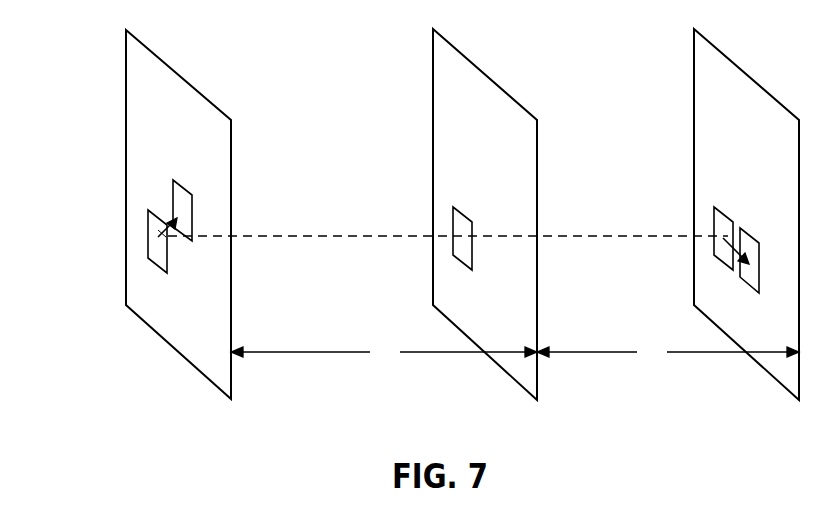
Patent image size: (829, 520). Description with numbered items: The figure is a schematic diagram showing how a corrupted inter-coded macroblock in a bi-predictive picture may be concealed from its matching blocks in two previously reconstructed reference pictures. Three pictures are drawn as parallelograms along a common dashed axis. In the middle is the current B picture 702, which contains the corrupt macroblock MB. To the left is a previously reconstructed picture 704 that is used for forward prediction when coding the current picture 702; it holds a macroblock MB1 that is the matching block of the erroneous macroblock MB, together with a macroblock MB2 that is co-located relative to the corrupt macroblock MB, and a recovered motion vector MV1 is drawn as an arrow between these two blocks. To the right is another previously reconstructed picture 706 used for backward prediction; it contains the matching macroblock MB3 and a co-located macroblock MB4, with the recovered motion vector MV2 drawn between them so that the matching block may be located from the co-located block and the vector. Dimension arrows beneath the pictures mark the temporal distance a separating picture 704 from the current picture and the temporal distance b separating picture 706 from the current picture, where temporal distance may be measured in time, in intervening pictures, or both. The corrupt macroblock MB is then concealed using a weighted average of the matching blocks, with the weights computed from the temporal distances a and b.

The previously reconstructed picture 704 is at (126, 168).
The current B picture 702 is at (433, 168).
The previously reconstructed picture 706 is at (694, 168).
The corrupt macroblock MB is at (458, 251).
The matching macroblock MB1 is at (174, 198).
The co-located macroblock MB2 is at (158, 253).
The matching macroblock MB3 is at (747, 275).
The co-located macroblock MB4 is at (719, 252).
The recovered motion vector MV1 is at (172, 226).
The recovered motion vector MV2 is at (738, 249).
The temporal distance a is at (384, 351).
The temporal distance b is at (668, 351).